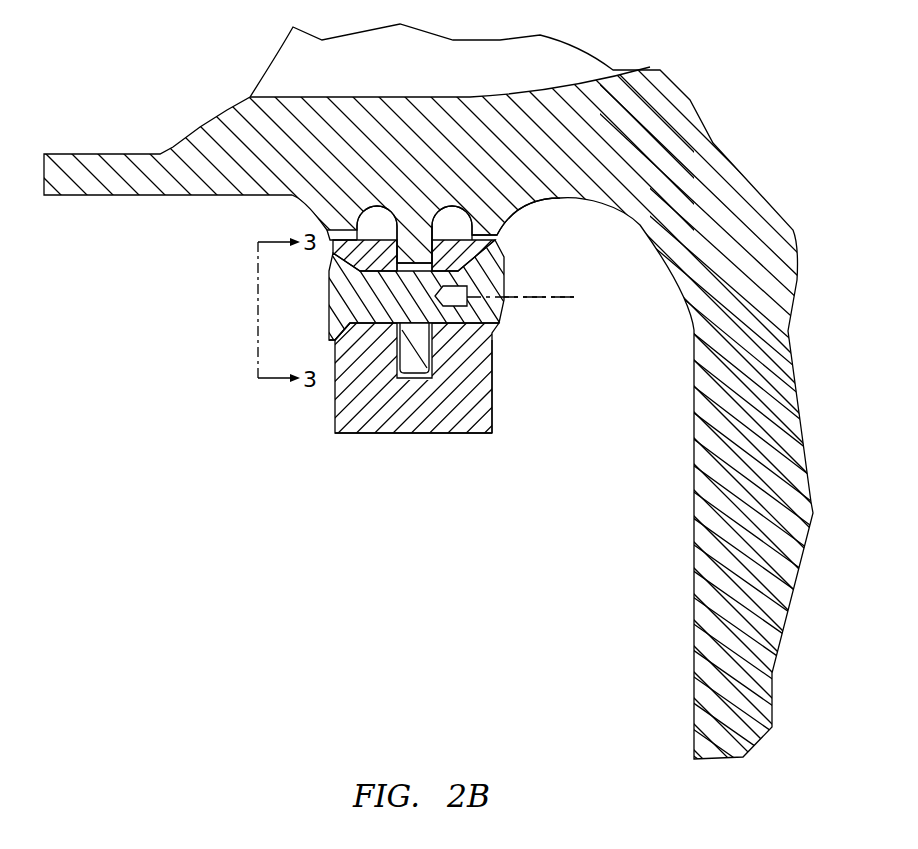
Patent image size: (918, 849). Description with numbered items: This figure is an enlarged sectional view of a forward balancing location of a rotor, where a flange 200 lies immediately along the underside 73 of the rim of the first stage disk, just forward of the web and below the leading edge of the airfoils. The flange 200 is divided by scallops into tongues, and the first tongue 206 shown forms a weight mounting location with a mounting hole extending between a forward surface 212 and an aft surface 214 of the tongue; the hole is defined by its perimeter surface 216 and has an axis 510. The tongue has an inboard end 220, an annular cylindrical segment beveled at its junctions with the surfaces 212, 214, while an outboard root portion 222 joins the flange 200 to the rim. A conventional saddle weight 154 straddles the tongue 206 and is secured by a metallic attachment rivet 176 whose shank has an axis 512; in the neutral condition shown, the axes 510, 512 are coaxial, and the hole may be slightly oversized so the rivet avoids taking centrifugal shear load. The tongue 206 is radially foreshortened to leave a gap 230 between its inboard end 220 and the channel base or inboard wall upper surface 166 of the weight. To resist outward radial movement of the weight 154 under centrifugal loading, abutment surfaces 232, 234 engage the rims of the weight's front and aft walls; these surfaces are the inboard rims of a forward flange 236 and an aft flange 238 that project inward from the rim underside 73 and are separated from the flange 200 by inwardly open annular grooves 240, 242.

The underside 73 is at (553, 204).
The saddle weight 154 is at (400, 423).
The inboard wall upper surface 166 is at (397, 347).
The attachment rivet 176 is at (357, 308).
The flange 200 is at (444, 263).
The first tongue 206 is at (493, 398).
The forward surface 212 is at (367, 353).
The aft surface 214 is at (420, 352).
The perimeter surface 216 is at (425, 293).
The inboard end 220 is at (427, 375).
The outboard root portion 222 is at (412, 225).
The gap 230 is at (437, 322).
The abutment surface 232 is at (334, 254).
The abutment surface 234 is at (497, 255).
The forward flange 236 is at (348, 230).
The aft flange 238 is at (490, 228).
The groove 240 is at (377, 223).
The groove 242 is at (493, 208).
The hole axis 510 is at (537, 297).
The shank axis 512 is at (545, 297).